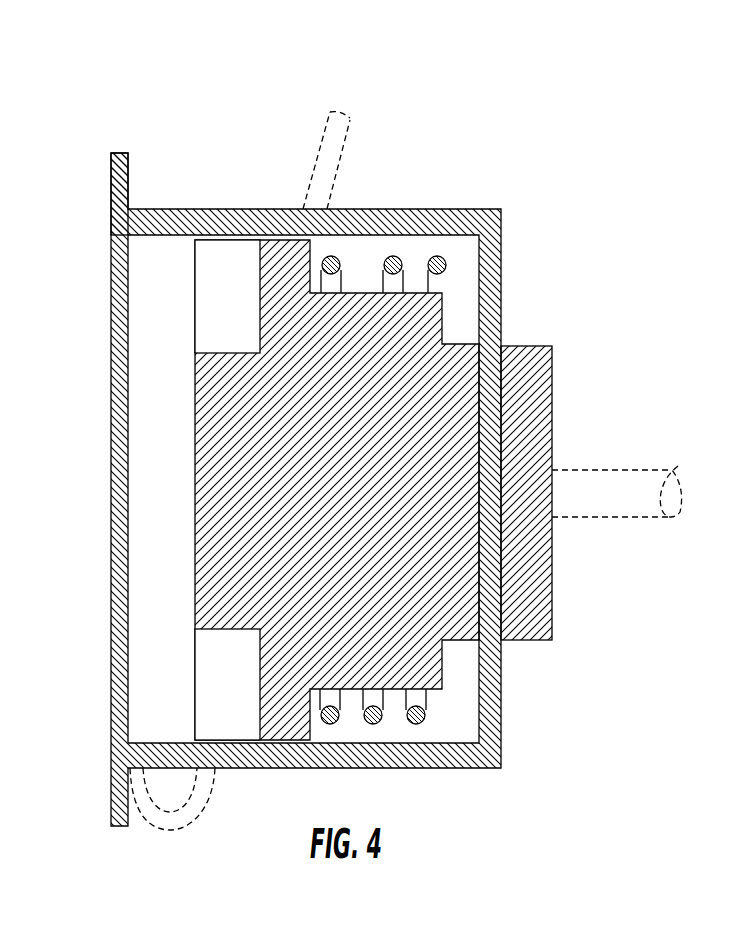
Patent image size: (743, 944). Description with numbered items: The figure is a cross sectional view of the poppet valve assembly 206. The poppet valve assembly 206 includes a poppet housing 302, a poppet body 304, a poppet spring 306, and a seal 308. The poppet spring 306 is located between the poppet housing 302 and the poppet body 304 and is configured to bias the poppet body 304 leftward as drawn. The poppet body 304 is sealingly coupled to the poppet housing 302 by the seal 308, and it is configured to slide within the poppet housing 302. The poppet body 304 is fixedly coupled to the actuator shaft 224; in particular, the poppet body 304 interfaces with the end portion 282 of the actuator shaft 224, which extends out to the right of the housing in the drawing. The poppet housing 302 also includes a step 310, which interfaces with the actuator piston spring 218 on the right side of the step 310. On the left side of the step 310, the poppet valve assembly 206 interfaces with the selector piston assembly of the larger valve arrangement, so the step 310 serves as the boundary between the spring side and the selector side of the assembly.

The poppet valve assembly 206 is at (70, 165).
The actuator piston spring 218 is at (350, 122).
The actuator shaft 224 is at (660, 470).
The end portion 282 is at (567, 470).
The poppet housing 302 is at (427, 209).
The poppet body 304 is at (195, 508).
The poppet spring 306 is at (332, 258).
The seal 308 is at (195, 276).
The step 310 is at (129, 172).